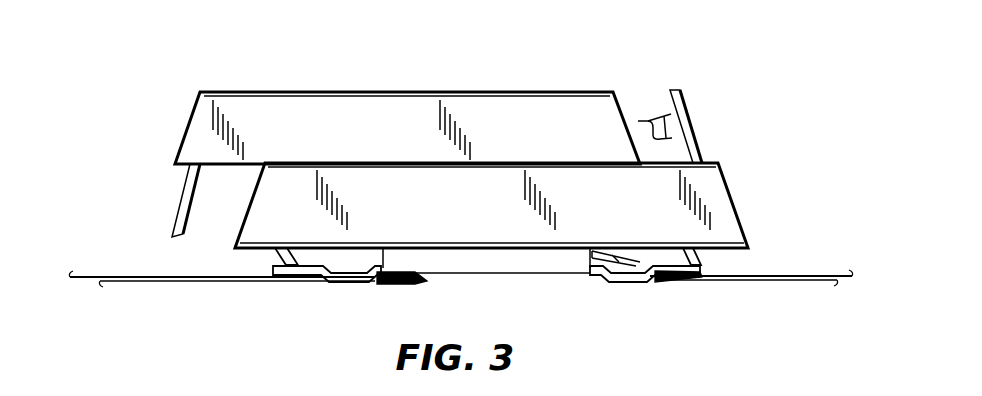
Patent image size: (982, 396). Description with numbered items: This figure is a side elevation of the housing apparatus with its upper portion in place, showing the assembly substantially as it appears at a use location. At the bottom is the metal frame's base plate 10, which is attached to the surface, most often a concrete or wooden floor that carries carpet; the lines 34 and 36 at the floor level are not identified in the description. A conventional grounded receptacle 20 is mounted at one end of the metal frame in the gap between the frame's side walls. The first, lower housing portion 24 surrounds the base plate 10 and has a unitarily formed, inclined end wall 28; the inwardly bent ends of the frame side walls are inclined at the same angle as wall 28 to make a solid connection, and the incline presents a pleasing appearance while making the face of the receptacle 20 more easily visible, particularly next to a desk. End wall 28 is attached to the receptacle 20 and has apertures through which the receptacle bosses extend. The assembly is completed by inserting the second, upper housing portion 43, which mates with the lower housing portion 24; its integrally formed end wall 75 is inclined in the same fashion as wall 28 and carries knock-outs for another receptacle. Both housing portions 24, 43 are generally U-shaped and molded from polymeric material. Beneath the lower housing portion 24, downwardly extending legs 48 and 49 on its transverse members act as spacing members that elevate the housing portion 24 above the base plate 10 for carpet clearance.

The base plate 10 is at (605, 282).
The grounded receptacle 20 is at (659, 118).
The lower housing portion 24 is at (240, 228).
The inclined end wall 28 is at (682, 92).
The upper substrate surface 34 is at (112, 277).
The lower substrate surface 36 is at (172, 283).
The upper housing portion 43 is at (276, 92).
The leg 48 is at (275, 266).
The leg 49 is at (703, 263).
The end wall 75 is at (180, 200).